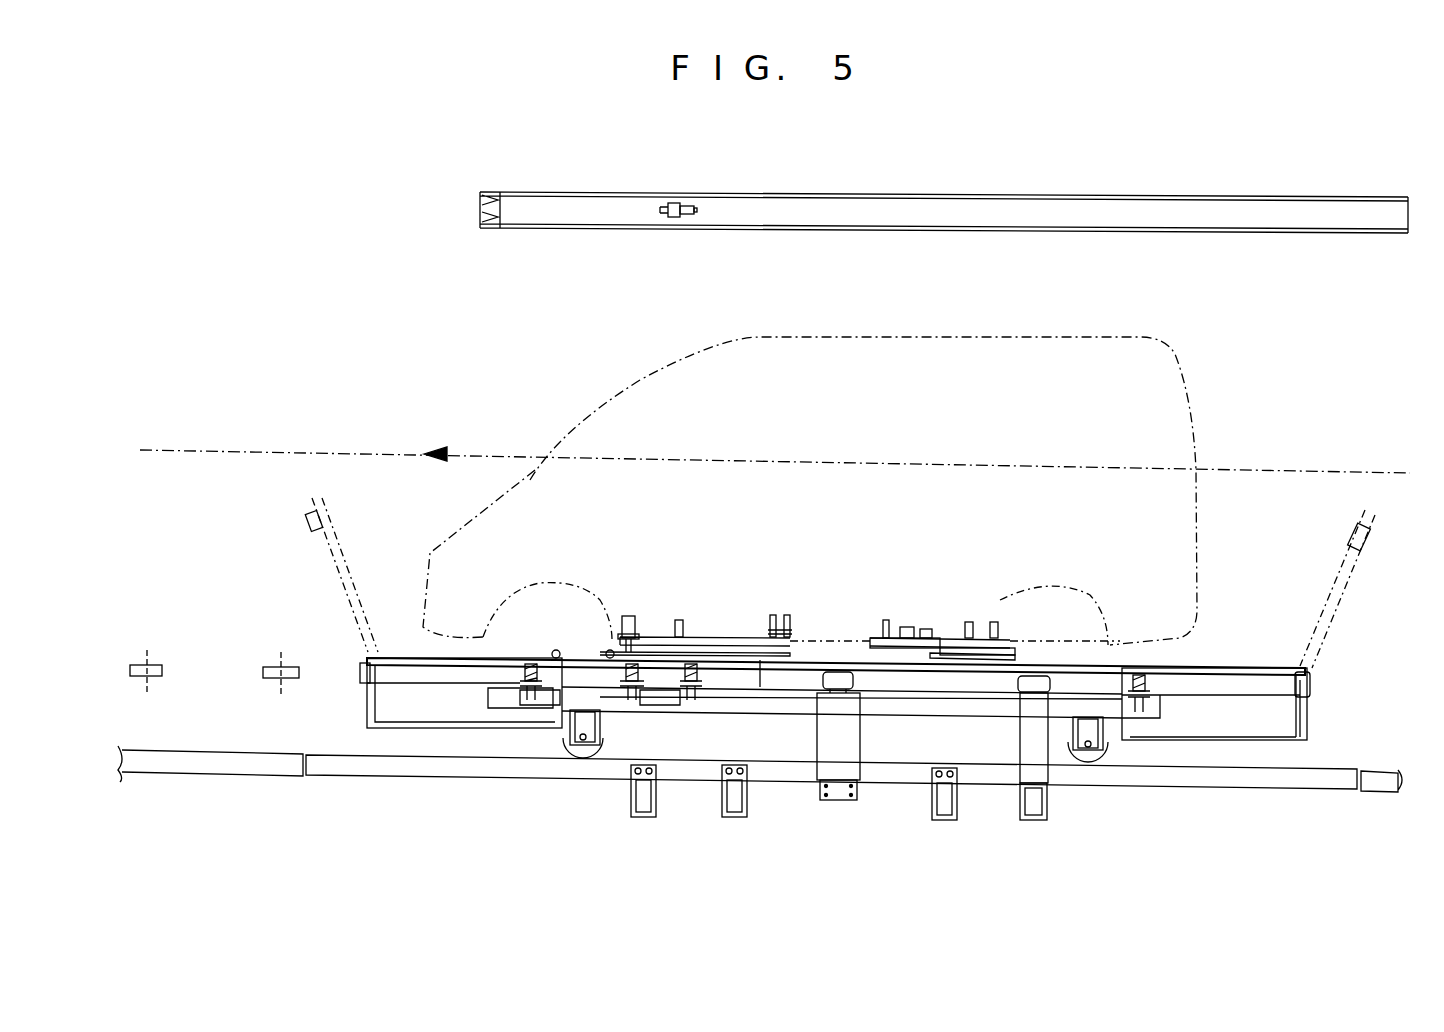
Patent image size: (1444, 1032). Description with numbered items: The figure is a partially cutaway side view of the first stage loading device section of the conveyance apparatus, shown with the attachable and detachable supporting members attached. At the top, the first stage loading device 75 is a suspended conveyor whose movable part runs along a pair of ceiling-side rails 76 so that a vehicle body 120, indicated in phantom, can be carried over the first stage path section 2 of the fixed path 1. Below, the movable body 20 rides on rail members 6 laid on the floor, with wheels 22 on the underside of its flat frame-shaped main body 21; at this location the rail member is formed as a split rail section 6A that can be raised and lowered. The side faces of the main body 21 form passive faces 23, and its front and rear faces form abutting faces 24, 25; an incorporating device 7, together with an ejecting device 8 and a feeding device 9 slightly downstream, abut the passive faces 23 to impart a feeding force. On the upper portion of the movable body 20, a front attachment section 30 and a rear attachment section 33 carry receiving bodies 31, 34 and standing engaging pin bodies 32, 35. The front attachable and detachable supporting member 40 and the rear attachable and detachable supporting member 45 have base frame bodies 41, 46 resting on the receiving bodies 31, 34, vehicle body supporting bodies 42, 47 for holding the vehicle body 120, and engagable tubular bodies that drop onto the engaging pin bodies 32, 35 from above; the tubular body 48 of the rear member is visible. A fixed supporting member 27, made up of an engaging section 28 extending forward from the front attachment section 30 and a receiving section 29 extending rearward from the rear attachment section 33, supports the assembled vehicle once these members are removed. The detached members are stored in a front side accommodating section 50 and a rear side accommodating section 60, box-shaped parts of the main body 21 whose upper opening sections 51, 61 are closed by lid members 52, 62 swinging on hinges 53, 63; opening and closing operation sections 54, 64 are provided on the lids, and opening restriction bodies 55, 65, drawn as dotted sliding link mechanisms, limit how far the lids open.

The fixed path 1 is at (250, 452).
The first stage path section 2 is at (152, 450).
The rail member 6 is at (215, 776).
The split rail section 6A is at (548, 780).
The incorporating device 7 is at (1030, 824).
The ejecting device 8 is at (272, 662).
The feeding device 9 is at (140, 660).
The movable body 20 is at (1318, 717).
The main body 21 is at (763, 707).
The wheel 22 is at (1087, 760).
The passive face 23 is at (898, 677).
The abutting face 24 is at (360, 683).
The abutting face 25 is at (1312, 683).
The fixed supporting member 27 is at (549, 606).
The engaging section 28 is at (610, 650).
The receiving section 29 is at (1078, 655).
The front attachment section 30 is at (681, 620).
The receiving body 31 is at (640, 616).
The engaging pin body 32 is at (752, 637).
The rear attachment section 33 is at (936, 648).
The receiving body 34 is at (870, 640).
The engaging pin body 35 is at (998, 622).
The front attachable and detachable supporting member 40 is at (713, 636).
The base frame body 41 is at (761, 662).
The vehicle body supporting body 42 is at (786, 615).
The rear attachable and detachable supporting member 45 is at (1009, 630).
The base frame body 46 is at (884, 620).
The vehicle body supporting body 47 is at (907, 627).
The engagable tubular body 48 is at (1014, 632).
The front side accommodating section 50 is at (420, 700).
The opening section 51 is at (409, 655).
The lid member 52 is at (438, 655).
The hinge 53 is at (378, 655).
The opening and closing operation section 54 is at (302, 522).
The opening restriction body 55 is at (392, 640).
The rear side accommodating section 60 is at (1228, 724).
The opening section 61 is at (1220, 668).
The lid member 62 is at (1238, 668).
The hinge 63 is at (1292, 668).
The opening and closing operation section 64 is at (1372, 516).
The opening restriction body 65 is at (1320, 622).
The first stage loading device 75 is at (1174, 186).
The ceiling-side rail 76 is at (972, 216).
The vehicle body 120 is at (1185, 380).